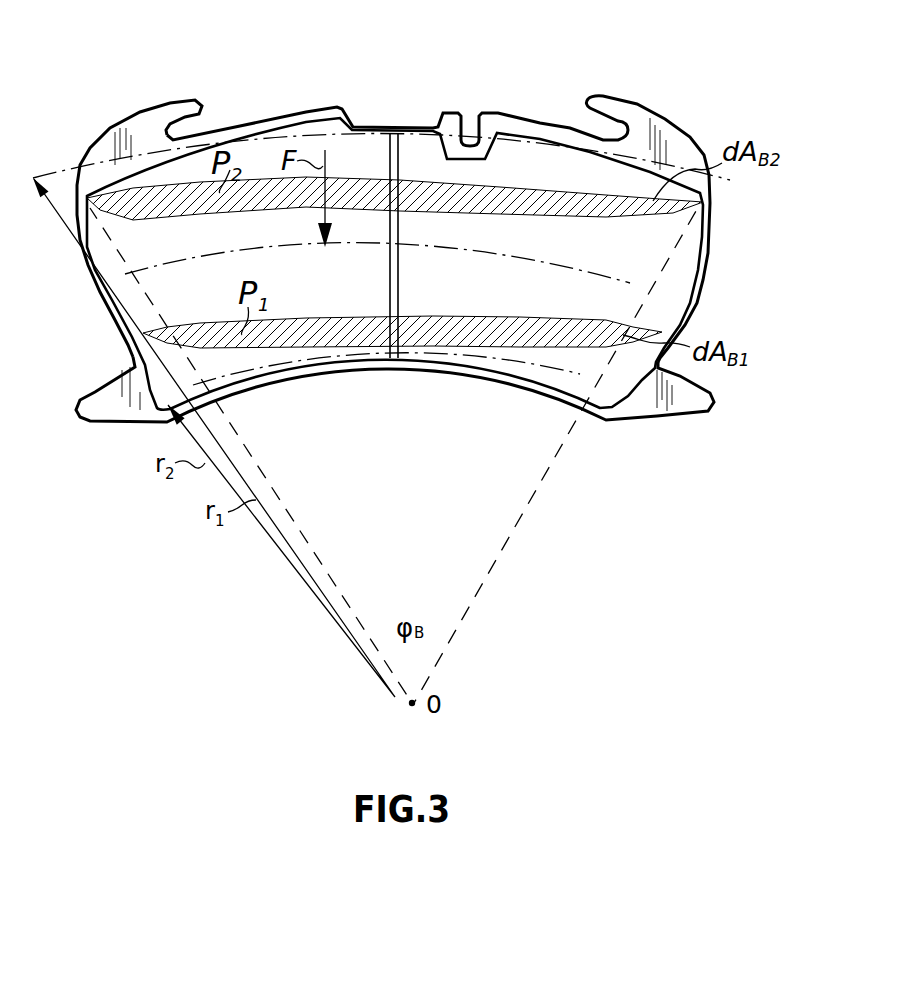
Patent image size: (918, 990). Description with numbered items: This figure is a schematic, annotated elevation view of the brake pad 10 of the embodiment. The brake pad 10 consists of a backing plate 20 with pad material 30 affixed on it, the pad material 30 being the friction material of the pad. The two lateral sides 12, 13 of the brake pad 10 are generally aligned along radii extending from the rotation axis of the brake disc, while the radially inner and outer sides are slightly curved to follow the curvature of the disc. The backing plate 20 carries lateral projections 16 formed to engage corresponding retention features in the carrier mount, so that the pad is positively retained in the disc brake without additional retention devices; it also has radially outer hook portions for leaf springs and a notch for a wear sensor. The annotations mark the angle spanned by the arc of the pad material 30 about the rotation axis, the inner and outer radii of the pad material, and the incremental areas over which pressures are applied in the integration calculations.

The brake pad 10 is at (662, 34).
The lateral side 12 is at (88, 268).
The lateral side 13 is at (703, 277).
The lateral projection 16 is at (697, 404).
The backing plate 20 is at (687, 135).
The pad material 30 is at (676, 295).